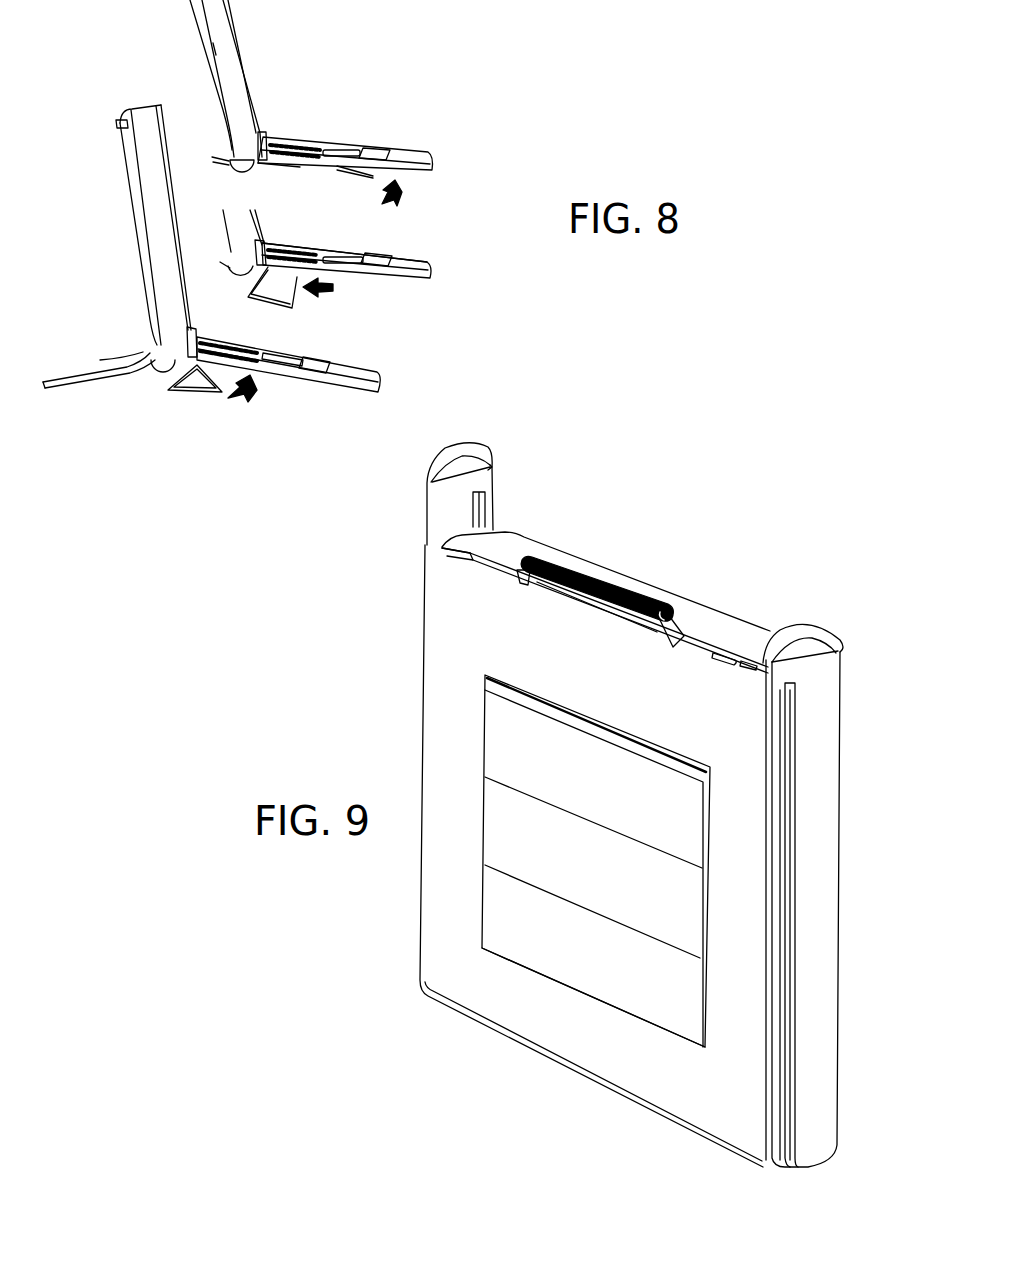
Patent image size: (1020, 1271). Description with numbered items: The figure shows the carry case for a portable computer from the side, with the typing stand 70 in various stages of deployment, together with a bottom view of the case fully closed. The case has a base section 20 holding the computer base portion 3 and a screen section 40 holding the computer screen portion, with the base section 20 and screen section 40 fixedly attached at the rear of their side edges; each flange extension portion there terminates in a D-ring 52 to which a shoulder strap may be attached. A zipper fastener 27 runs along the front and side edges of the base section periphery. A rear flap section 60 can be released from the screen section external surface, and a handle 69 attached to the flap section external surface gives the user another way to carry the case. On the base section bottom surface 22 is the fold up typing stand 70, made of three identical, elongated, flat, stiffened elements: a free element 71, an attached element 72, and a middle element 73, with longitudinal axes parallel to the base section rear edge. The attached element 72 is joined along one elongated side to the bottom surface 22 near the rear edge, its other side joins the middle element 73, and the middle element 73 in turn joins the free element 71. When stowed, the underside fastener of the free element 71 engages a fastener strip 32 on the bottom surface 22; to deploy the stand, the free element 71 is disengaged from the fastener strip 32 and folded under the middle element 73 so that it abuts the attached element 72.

In FIG. 8, the base portion 3 is at (403, 265).
In FIG. 8, the base section 20 is at (430, 278).
In FIG. 9, the base section 20 is at (487, 651).
In FIG. 8, the bottom surface 22 is at (397, 280).
In FIG. 9, the bottom surface 22 is at (436, 690).
In FIG. 9, the zipper fastener 27 is at (785, 940).
In FIG. 8, the fastener strip 32 is at (297, 398).
In FIG. 8, the screen section 40 is at (233, 70).
In FIG. 8, the D-ring 52 is at (160, 375).
In FIG. 9, the D-ring 52 is at (472, 442).
In FIG. 8, the rear flap section 60 is at (90, 387).
In FIG. 9, the handle 69 is at (657, 593).
In FIG. 9, the typing stand 70 is at (495, 855).
In FIG. 8, the free element 71 is at (353, 180).
In FIG. 9, the free element 71 is at (620, 965).
In FIG. 8, the attached element 72 is at (290, 170).
In FIG. 9, the attached element 72 is at (600, 785).
In FIG. 8, the middle element 73 is at (270, 312).
In FIG. 9, the middle element 73 is at (618, 880).